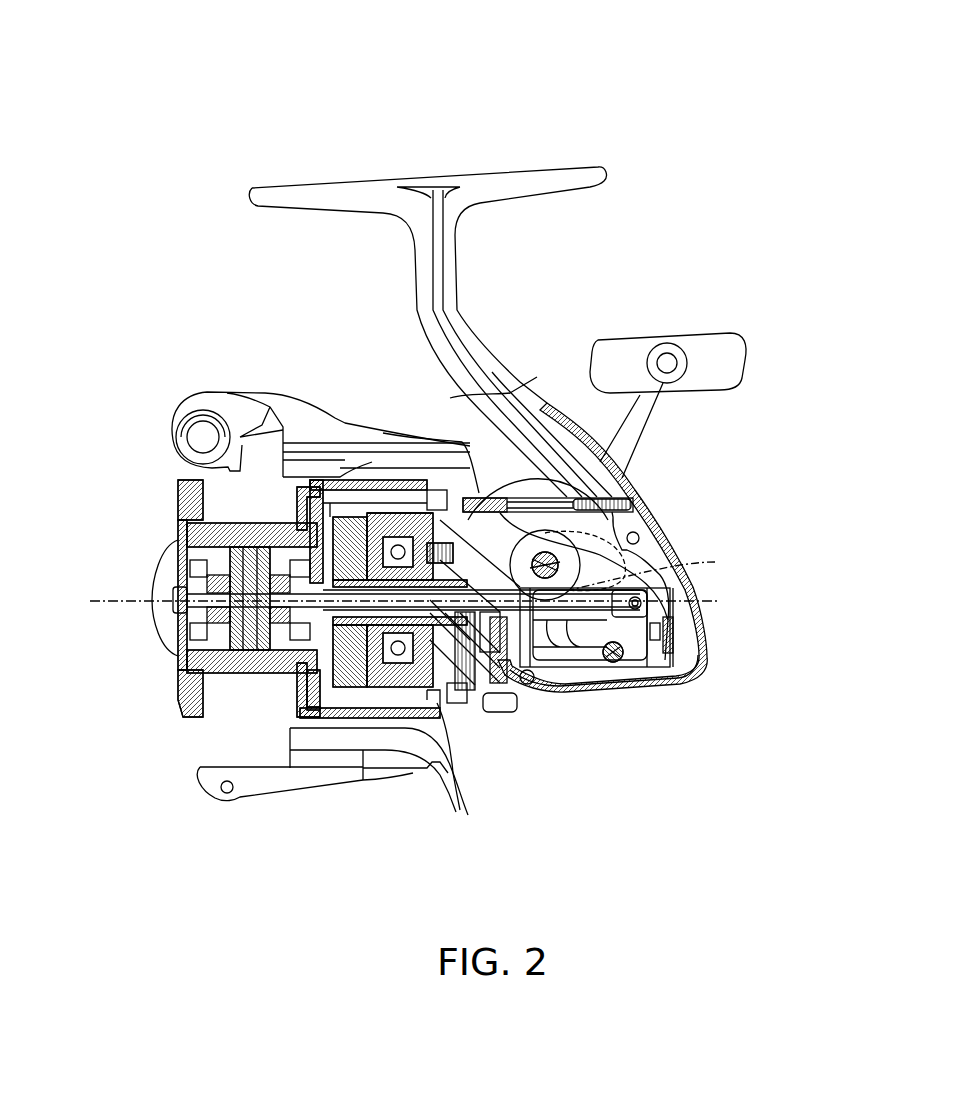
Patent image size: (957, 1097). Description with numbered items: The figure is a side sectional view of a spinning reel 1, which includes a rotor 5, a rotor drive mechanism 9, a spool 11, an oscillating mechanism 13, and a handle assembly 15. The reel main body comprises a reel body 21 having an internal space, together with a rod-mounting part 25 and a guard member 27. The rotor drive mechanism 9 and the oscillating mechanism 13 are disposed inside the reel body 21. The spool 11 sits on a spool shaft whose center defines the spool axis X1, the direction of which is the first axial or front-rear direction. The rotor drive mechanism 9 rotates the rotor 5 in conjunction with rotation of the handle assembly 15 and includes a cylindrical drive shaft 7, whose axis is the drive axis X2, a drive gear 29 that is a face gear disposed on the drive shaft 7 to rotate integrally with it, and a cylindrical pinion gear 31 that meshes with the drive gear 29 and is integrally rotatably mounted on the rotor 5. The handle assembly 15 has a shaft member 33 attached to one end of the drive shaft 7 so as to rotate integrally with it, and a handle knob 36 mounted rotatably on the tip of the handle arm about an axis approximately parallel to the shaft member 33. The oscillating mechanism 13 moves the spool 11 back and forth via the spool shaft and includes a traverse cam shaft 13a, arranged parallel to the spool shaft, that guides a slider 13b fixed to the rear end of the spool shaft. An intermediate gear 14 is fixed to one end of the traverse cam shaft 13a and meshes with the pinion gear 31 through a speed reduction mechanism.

The spinning reel 1 is at (651, 97).
The rotor 5 is at (314, 395).
The drive shaft 7 is at (572, 528).
The rotor drive mechanism 9 is at (480, 493).
The spool 11 is at (228, 683).
The oscillating mechanism 13 is at (587, 680).
The traverse cam shaft 13a is at (562, 640).
The slider 13b is at (640, 677).
The intermediate gear 14 is at (449, 703).
The handle assembly 15 is at (660, 412).
The reel body 21 is at (513, 527).
The rod-mounting part 25 is at (530, 190).
The guard member 27 is at (667, 683).
The drive gear 29 is at (544, 552).
The pinion gear 31 is at (490, 697).
The shaft member 33 is at (590, 489).
The handle knob 36 is at (706, 343).
The spool axis X1 is at (404, 603).
The drive axis X2 is at (661, 569).